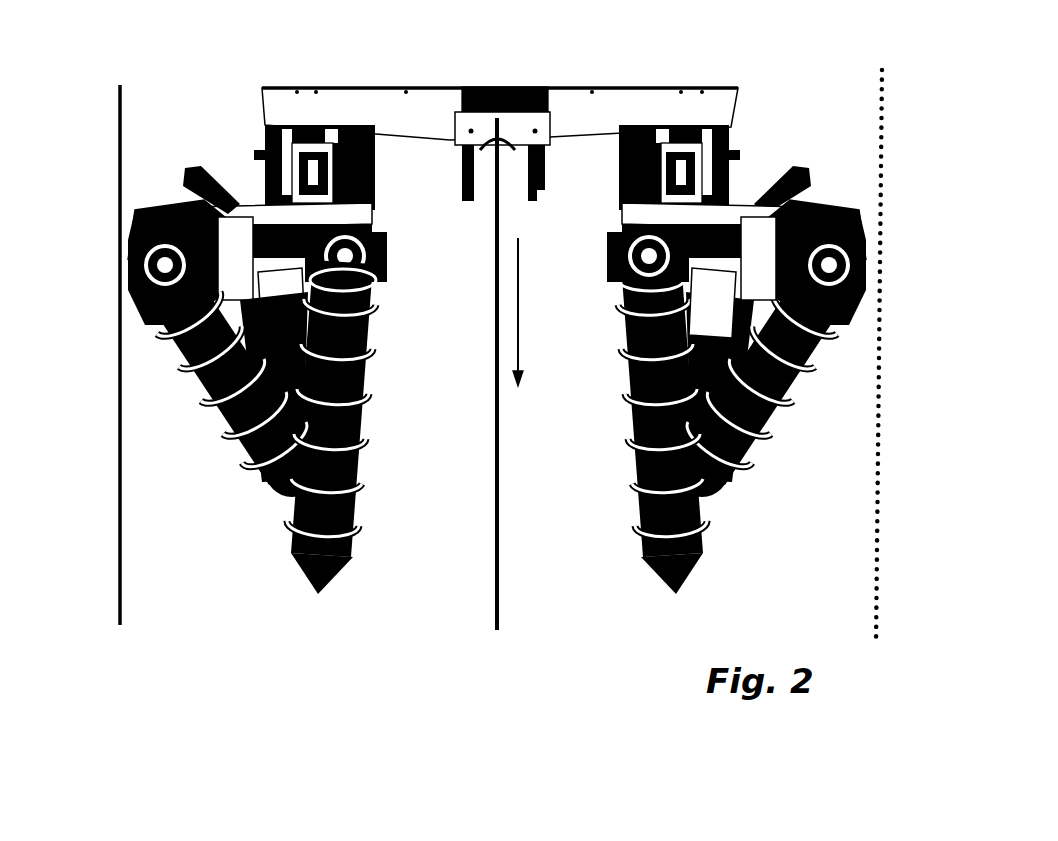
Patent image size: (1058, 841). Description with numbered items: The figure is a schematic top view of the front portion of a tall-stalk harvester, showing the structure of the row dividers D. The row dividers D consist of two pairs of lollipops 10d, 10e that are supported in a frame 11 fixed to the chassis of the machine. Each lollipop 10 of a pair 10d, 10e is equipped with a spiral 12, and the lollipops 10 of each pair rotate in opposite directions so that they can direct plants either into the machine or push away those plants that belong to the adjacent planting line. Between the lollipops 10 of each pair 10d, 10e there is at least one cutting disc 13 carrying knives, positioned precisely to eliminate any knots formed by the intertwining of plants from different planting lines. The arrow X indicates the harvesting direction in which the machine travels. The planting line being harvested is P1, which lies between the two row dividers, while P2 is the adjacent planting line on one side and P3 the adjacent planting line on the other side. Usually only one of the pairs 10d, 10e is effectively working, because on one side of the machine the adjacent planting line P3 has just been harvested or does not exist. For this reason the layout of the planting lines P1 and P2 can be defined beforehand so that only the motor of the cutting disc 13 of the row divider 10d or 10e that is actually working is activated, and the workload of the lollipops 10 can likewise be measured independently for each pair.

The lollipop 10 is at (215, 372).
The frame 11 is at (424, 113).
The spiral 12 is at (240, 440).
The cutting disc 13 is at (238, 213).
The pair of lollipops 10d is at (236, 584).
The pair of lollipops 10e is at (612, 574).
The row divider D is at (780, 106).
The harvesting direction X is at (528, 312).
The planting line to be harvested P1 is at (497, 575).
The adjacent planting line P2 is at (120, 625).
The adjacent planting line P3 is at (875, 617).